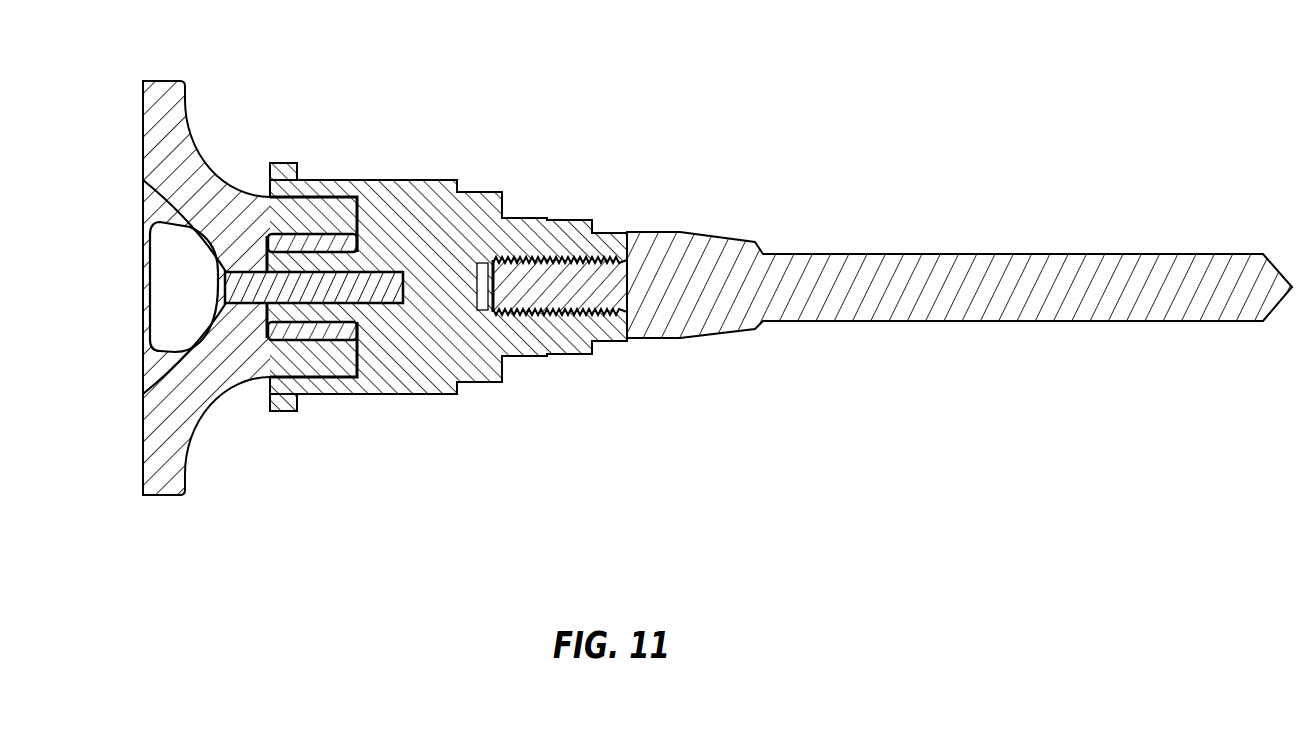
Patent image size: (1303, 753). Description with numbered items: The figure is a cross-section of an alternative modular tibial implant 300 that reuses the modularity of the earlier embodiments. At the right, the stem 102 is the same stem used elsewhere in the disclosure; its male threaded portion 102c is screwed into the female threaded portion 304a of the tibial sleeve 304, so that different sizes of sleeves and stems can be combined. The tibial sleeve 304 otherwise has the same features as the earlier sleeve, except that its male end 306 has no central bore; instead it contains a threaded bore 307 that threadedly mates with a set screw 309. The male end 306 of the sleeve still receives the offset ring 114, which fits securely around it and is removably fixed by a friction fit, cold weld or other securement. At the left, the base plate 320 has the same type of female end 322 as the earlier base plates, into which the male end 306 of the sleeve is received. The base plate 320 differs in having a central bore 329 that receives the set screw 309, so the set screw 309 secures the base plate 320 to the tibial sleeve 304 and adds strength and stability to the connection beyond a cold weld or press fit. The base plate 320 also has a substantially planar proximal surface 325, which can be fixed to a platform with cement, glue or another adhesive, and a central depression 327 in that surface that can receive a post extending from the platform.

The tibial implant 300 is at (683, 304).
The base plate 320 is at (172, 283).
The proximal surface 325 is at (141, 460).
The central depression 327 is at (185, 243).
The central bore 329 is at (243, 287).
The set screw 309 is at (300, 290).
The male end 306 is at (395, 277).
The threaded bore 307 is at (360, 248).
The female end 322 is at (327, 367).
The offset ring 114 is at (358, 345).
The tibial sleeve 304 is at (447, 293).
The female threaded portion 304a is at (527, 315).
The stem 102 is at (892, 310).
The male threaded portion 102c is at (592, 300).